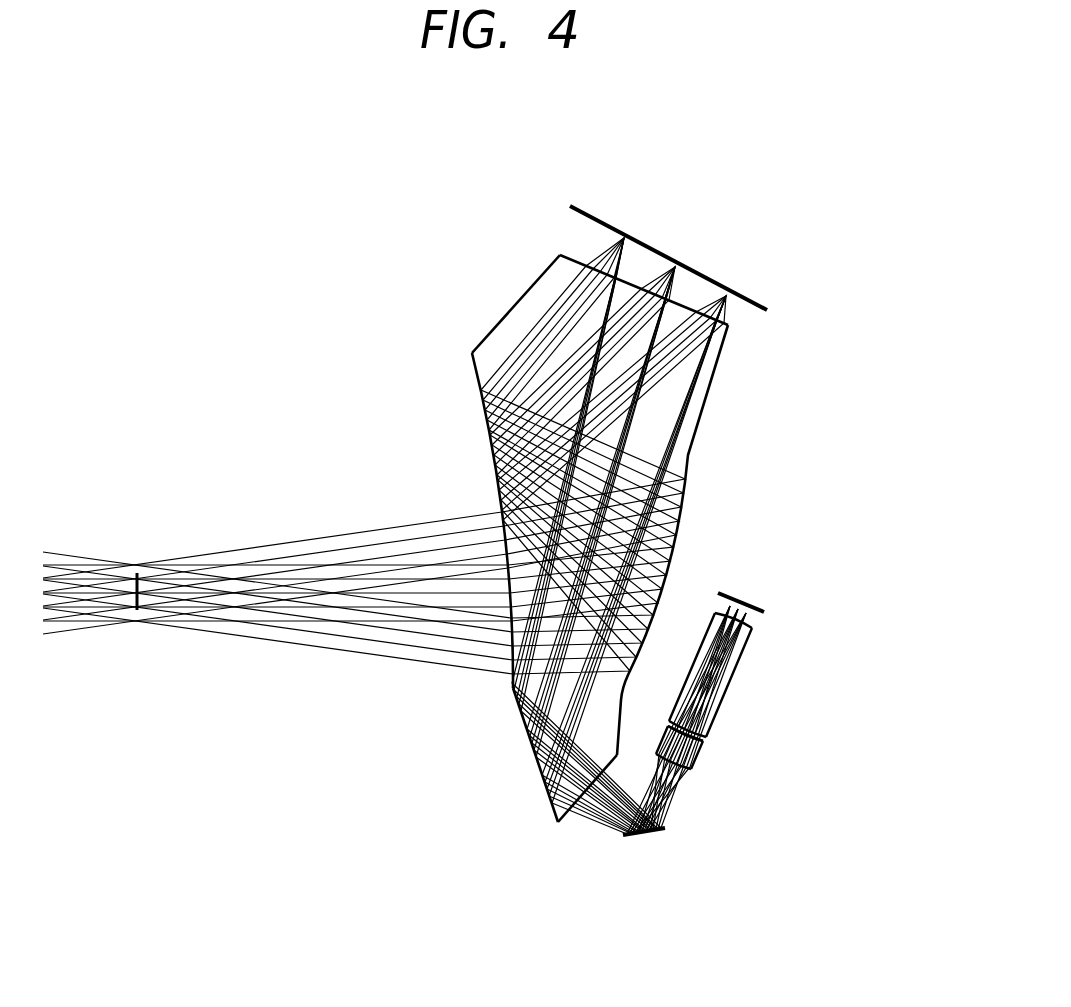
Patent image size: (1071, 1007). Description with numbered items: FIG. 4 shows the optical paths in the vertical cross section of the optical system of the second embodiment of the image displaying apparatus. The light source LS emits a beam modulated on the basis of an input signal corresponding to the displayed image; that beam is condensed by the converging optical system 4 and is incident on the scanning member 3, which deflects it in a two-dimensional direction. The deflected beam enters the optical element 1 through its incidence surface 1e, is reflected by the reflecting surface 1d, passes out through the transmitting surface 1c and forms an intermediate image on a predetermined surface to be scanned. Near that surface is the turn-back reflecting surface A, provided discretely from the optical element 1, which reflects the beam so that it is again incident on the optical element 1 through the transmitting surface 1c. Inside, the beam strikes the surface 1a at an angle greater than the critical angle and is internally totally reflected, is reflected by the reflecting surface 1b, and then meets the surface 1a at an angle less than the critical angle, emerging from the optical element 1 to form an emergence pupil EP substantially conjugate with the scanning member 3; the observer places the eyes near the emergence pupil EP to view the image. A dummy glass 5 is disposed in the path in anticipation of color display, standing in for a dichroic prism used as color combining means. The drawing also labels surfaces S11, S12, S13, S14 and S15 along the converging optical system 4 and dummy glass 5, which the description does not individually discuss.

The optical element 1 is at (561, 545).
The surface 1a is at (490, 435).
The reflecting surface 1b is at (688, 488).
The transmitting surface 1c is at (568, 252).
The reflecting surface 1d is at (528, 735).
The incidence surface 1e is at (575, 806).
The turn-back reflecting surface A is at (702, 274).
The emergence pupil EP is at (140, 572).
The light source LS is at (732, 585).
The scanning member 3 is at (638, 838).
The converging optical system 4 is at (755, 802).
The dummy glass 5 is at (772, 675).
The surface of lens 4 S11 is at (686, 772).
The surface of lens 4 S12 is at (705, 744).
The surface of lens 5 S13 is at (704, 738).
The surface of lens 5 S14 is at (702, 708).
The surface of lens 5 S15 is at (750, 626).